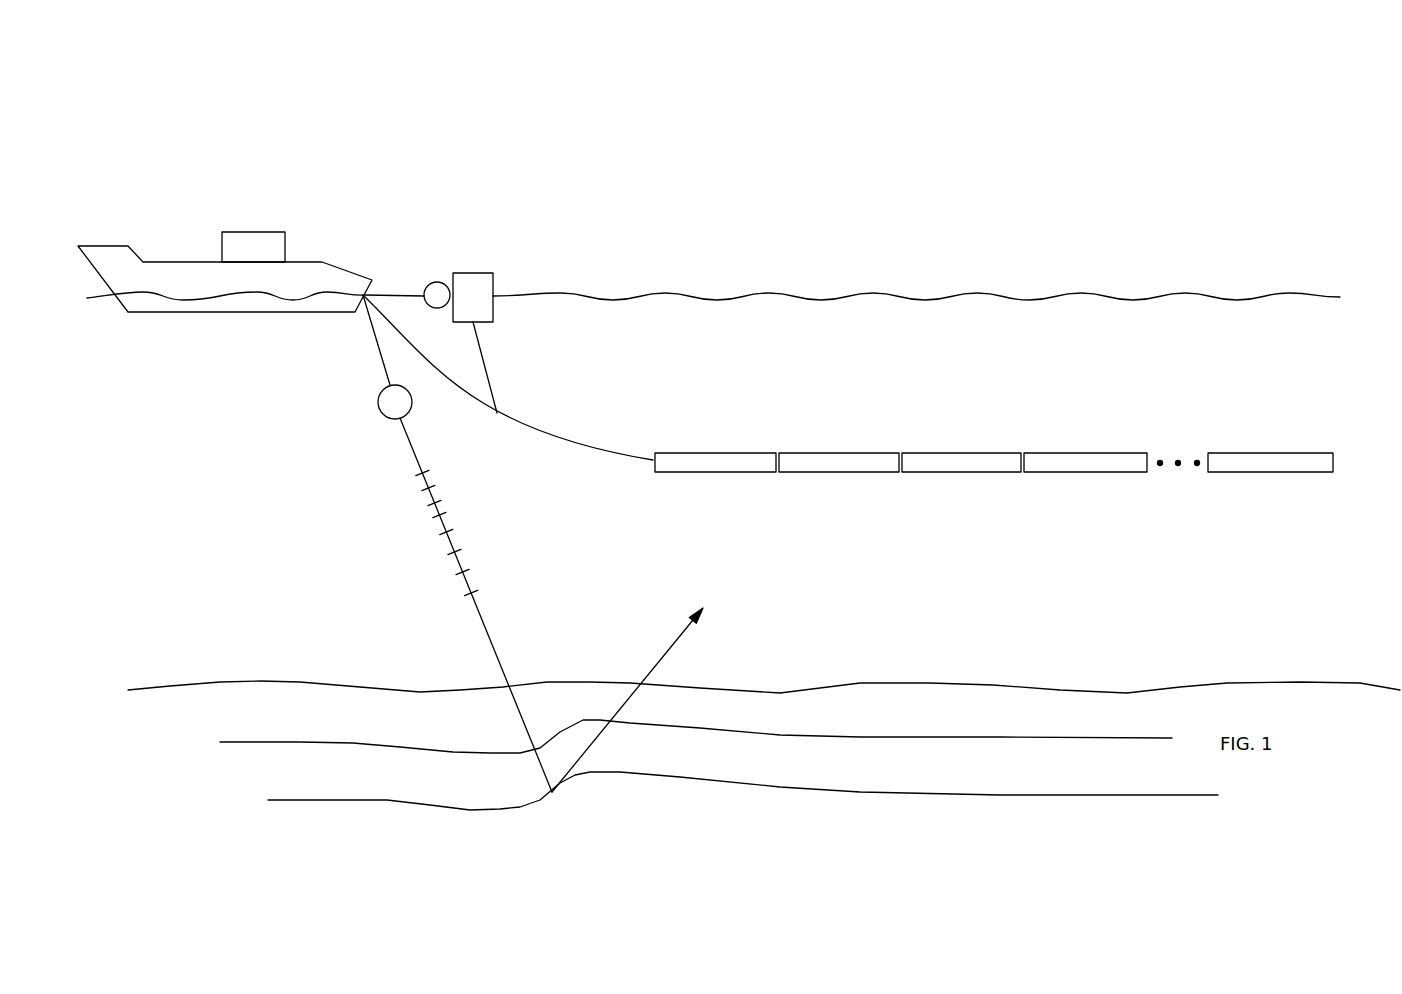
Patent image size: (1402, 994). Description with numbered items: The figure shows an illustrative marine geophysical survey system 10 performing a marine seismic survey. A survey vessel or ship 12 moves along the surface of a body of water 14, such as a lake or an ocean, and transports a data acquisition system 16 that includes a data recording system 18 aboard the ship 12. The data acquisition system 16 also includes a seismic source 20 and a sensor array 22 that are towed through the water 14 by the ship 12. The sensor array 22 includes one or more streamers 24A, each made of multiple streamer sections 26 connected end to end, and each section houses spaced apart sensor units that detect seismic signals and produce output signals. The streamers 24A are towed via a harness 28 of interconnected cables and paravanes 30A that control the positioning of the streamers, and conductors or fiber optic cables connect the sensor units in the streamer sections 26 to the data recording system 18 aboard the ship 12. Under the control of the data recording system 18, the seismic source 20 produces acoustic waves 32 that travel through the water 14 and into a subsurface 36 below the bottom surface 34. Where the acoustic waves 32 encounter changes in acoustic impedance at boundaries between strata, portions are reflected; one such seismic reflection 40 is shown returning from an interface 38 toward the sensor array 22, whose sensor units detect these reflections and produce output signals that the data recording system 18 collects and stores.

The marine geophysical survey system 10 is at (893, 101).
The survey vessel 12 is at (162, 258).
The body of water 14 is at (205, 423).
The data acquisition system 16 is at (677, 166).
The data recording system 18 is at (252, 230).
The seismic source 20 is at (393, 418).
The sensor array 22 is at (984, 461).
The streamer 24A is at (527, 432).
The streamer section 26 is at (678, 473).
The harness 28 is at (408, 222).
The paravane 30A is at (472, 273).
The acoustic waves 32 is at (433, 515).
The bottom surface 34 is at (290, 680).
The subsurface 36 is at (263, 721).
The interface 38 is at (685, 777).
The seismic reflection 40 is at (667, 652).